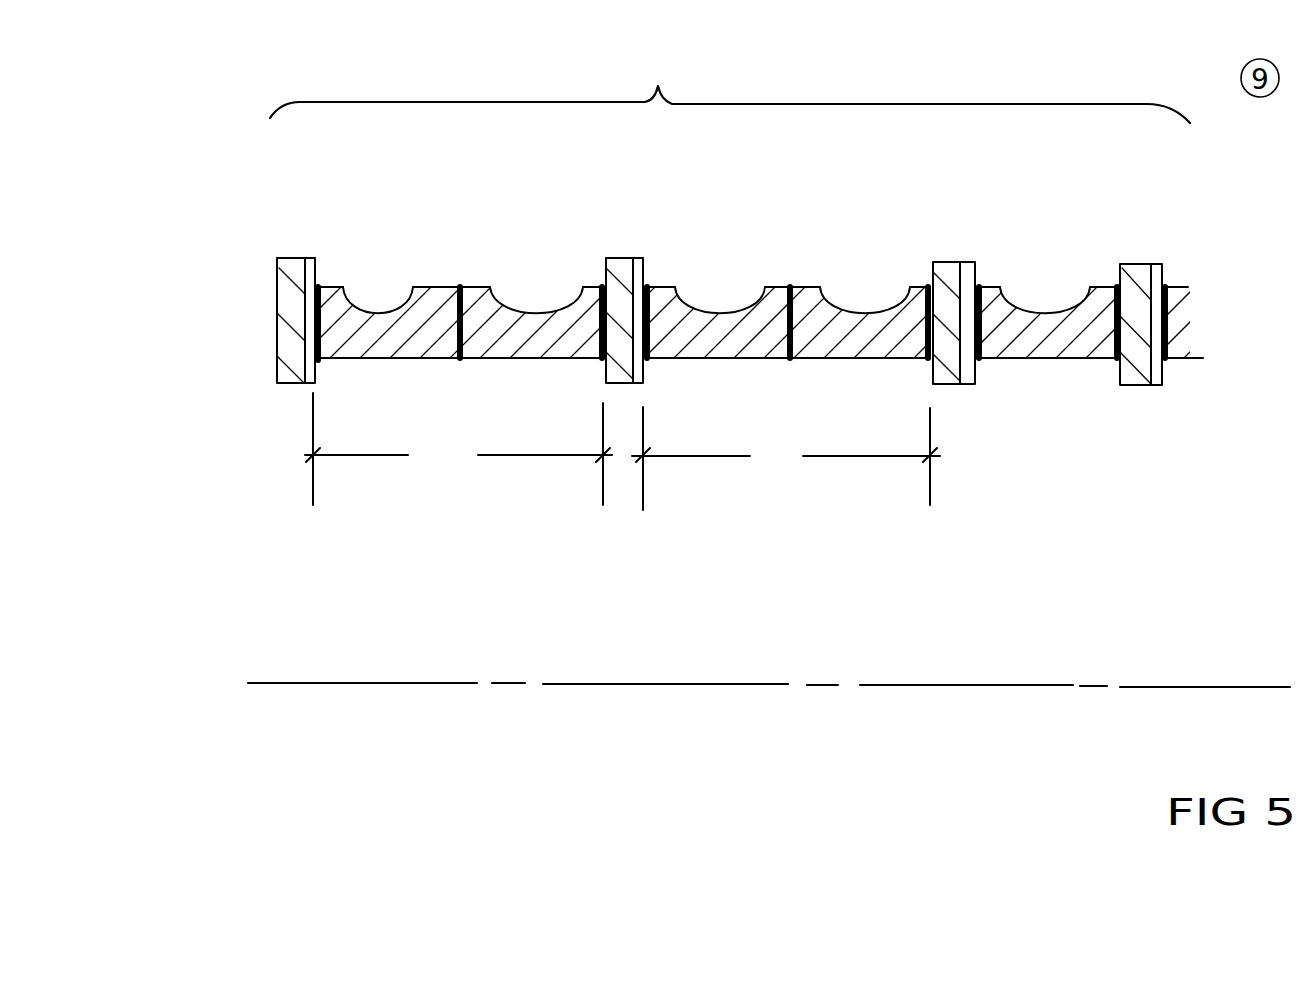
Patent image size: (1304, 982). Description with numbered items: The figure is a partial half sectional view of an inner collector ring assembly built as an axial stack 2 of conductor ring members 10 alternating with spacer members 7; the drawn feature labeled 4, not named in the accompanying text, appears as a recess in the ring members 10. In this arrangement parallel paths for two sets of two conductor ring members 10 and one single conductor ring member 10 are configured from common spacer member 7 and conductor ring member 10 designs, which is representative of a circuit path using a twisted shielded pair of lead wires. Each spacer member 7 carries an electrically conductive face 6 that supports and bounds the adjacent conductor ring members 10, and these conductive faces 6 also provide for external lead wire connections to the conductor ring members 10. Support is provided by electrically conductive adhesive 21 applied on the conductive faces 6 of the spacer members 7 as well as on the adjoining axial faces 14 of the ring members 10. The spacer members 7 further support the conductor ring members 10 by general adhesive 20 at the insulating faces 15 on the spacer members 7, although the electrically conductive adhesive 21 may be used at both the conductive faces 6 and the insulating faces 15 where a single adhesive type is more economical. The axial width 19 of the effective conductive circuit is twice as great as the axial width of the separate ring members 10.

The axial stack 2 is at (730, 84).
The recess 4 is at (415, 307).
The electrically conductive face 6 is at (318, 277).
The spacer member 7 is at (290, 288).
The conductor ring member 10 is at (340, 335).
The adjoining axial face 14 is at (462, 355).
The insulating face 15 is at (607, 268).
The axial width 19 is at (622, 451).
The general adhesive 20 is at (603, 360).
The electrically conductive adhesive 21 is at (318, 358).